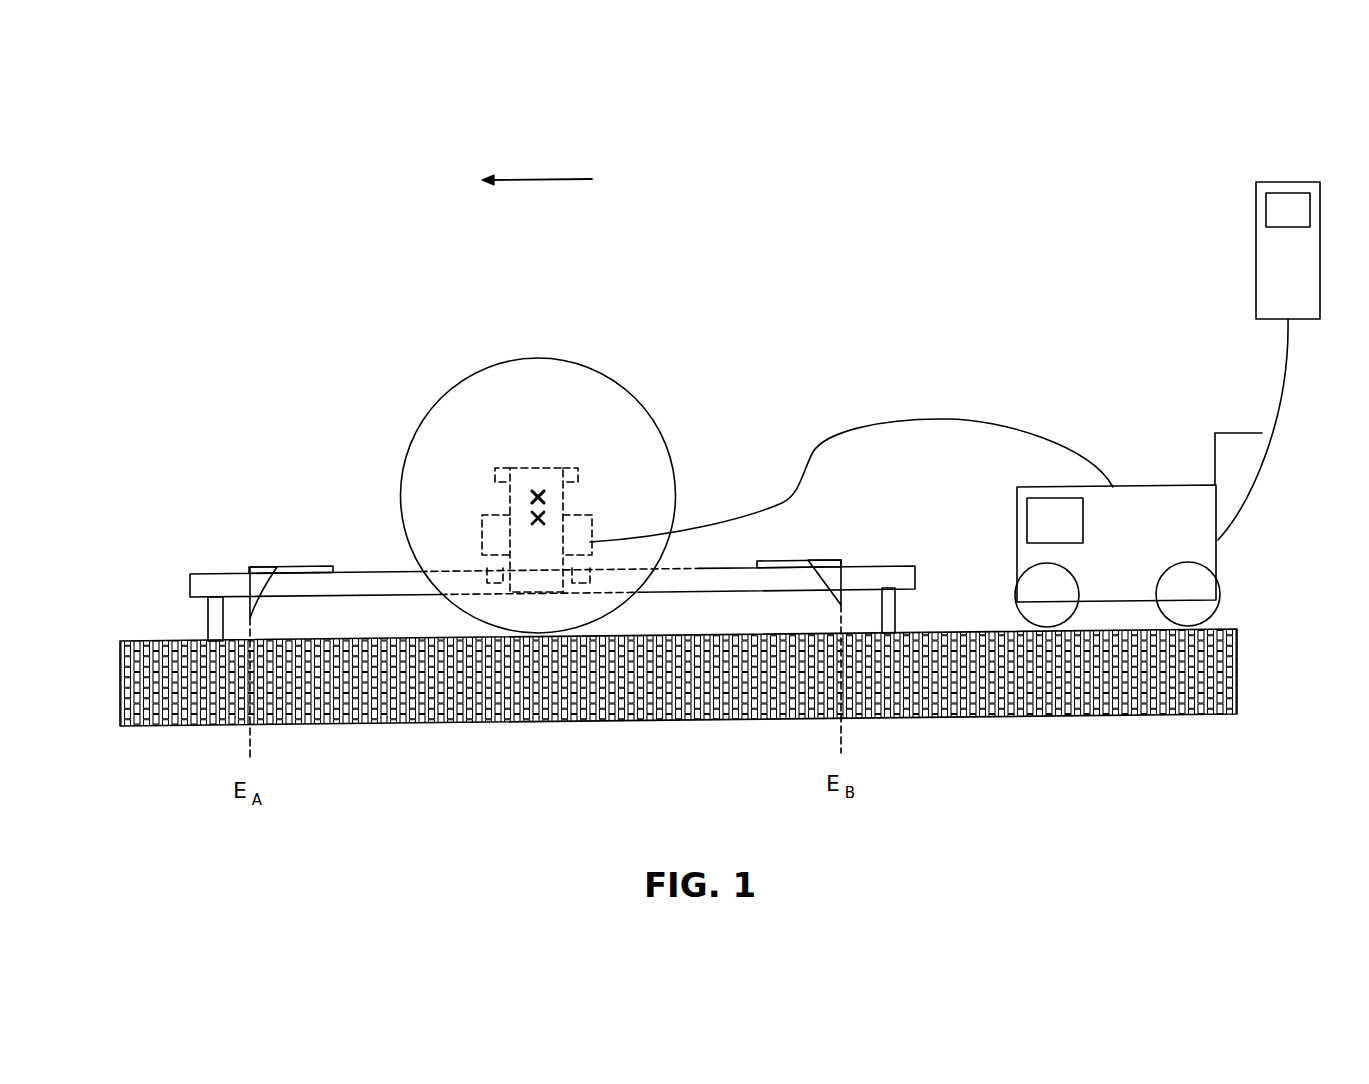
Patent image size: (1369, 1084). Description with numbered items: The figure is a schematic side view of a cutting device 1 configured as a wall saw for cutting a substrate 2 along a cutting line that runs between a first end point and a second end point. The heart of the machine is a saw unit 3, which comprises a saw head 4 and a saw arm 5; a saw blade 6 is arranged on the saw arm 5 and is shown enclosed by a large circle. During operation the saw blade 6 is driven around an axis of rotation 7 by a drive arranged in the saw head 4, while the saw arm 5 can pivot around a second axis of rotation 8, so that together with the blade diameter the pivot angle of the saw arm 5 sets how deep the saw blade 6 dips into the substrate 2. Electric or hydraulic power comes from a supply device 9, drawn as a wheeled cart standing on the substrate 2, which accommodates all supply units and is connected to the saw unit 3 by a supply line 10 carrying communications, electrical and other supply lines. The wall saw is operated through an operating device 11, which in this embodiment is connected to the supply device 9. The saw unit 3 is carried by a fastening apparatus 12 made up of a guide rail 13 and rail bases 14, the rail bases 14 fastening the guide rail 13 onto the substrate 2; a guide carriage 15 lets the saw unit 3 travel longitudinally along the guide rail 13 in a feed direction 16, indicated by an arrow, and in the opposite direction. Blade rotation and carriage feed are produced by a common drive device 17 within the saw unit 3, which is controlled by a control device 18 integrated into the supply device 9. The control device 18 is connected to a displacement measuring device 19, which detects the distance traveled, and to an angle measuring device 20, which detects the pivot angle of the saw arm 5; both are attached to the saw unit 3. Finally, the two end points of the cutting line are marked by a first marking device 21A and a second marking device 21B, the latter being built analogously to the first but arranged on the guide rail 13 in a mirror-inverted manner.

The cutting device 1 is at (1052, 200).
The substrate 2 is at (603, 718).
The saw unit 3 is at (470, 460).
The saw head 4 is at (575, 533).
The saw arm 5 is at (535, 475).
The saw blade 6 is at (508, 358).
The axis of rotation 7 is at (532, 497).
The axis of rotation 8 is at (538, 527).
The supply device 9 is at (1110, 560).
The supply line 10 is at (917, 420).
The operating device 11 is at (1275, 287).
The fastening apparatus 12 is at (187, 552).
The guide rail 13 is at (347, 582).
The rail bases 14 is at (215, 616).
The guide carriage 15 is at (585, 562).
The feed direction 16 is at (537, 178).
The common drive device 17 is at (490, 542).
The control device 18 is at (1042, 532).
The displacement measuring device 19 is at (503, 468).
The angle measuring device 20 is at (568, 468).
The first marking device 21A is at (262, 546).
The second marking device 21B is at (826, 541).